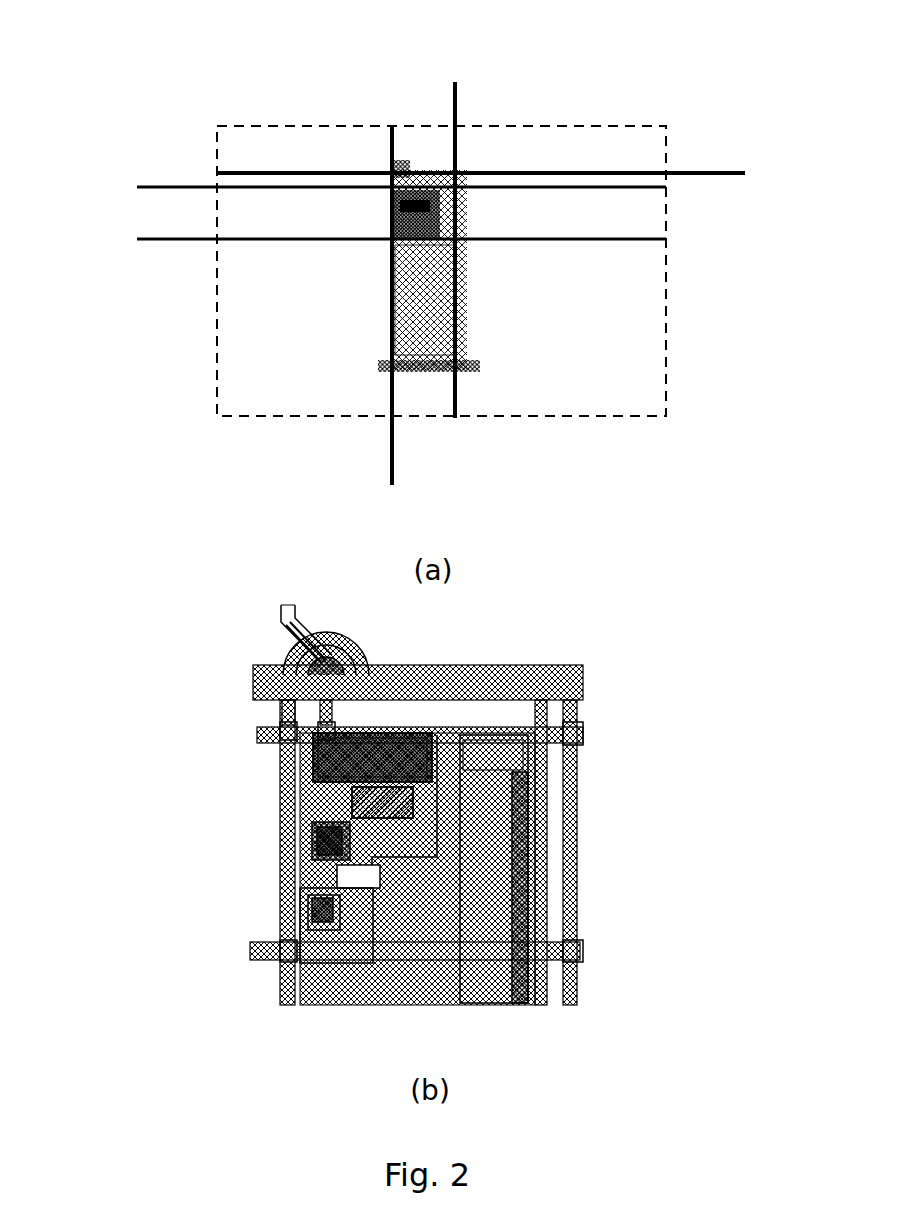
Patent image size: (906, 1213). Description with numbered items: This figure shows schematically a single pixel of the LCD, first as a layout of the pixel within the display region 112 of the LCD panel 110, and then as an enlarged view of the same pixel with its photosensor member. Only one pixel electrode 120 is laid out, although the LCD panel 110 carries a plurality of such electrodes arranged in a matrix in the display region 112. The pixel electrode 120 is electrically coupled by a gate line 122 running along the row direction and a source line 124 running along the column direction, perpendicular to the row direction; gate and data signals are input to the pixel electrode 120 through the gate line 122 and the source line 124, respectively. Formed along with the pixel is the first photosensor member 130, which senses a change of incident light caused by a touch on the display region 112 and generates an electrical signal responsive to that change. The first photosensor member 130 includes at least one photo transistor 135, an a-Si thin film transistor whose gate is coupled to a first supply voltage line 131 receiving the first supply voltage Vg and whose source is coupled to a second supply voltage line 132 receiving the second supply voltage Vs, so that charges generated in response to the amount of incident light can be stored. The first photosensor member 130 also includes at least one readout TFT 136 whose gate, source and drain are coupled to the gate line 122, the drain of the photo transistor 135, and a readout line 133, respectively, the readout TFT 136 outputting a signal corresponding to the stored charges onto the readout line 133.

The LCD panel 110 is at (182, 294).
The display region 112 is at (292, 343).
The pixel electrode 120 is at (442, 311).
The gate line 122 is at (531, 169).
The source line 124 is at (454, 223).
The first photosensor member 130 is at (410, 210).
The first supply voltage line 131 is at (180, 187).
The second supply voltage line 132 is at (180, 239).
The readout line 133 is at (392, 334).
The photo transistor 135 is at (360, 790).
The readout TFT 136 is at (300, 687).